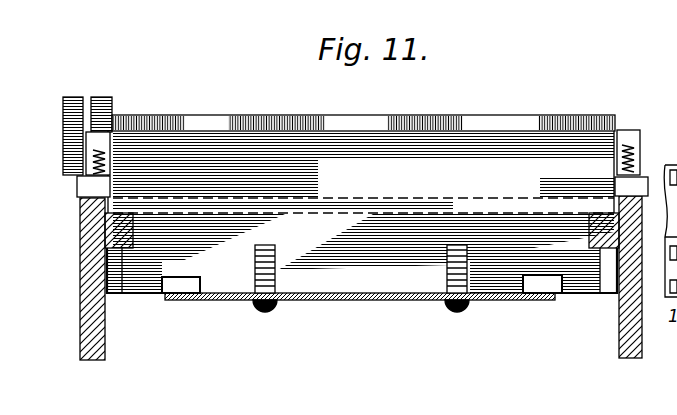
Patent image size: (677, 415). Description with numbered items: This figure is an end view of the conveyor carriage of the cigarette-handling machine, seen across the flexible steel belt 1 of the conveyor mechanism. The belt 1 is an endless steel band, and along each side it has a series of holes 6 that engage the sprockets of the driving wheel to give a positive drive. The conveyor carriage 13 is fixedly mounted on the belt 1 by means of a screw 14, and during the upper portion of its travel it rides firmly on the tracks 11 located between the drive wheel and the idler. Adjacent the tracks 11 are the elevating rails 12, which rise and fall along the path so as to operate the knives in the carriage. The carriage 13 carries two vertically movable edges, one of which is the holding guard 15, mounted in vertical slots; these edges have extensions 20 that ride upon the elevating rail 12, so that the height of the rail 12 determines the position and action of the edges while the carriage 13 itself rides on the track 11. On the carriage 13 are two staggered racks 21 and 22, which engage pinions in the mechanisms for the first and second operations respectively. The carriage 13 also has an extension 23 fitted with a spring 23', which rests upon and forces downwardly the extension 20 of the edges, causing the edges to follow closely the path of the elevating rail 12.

The steel belt 1 is at (360, 316).
The holes 6 is at (180, 297).
The tracks 11 is at (122, 293).
The elevating rails 12 is at (96, 203).
The conveyor carriage 13 is at (360, 212).
The screw 14 is at (276, 304).
The holding guard 15 is at (260, 117).
The extensions 20 is at (92, 186).
The rack 21 is at (100, 110).
The rack 22 is at (74, 108).
The extension 23 is at (334, 137).
The spring 23' is at (348, 146).